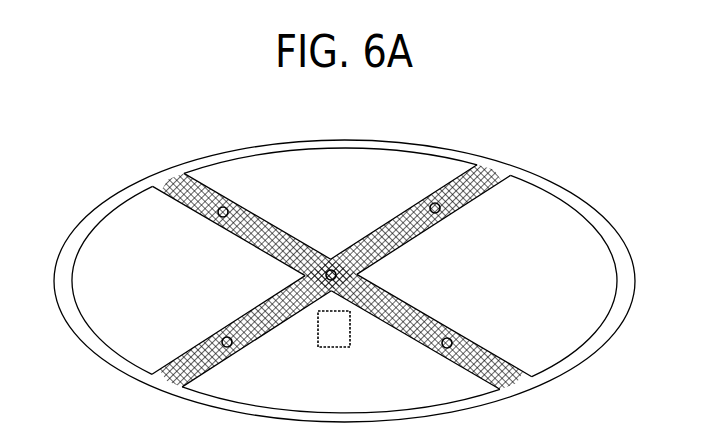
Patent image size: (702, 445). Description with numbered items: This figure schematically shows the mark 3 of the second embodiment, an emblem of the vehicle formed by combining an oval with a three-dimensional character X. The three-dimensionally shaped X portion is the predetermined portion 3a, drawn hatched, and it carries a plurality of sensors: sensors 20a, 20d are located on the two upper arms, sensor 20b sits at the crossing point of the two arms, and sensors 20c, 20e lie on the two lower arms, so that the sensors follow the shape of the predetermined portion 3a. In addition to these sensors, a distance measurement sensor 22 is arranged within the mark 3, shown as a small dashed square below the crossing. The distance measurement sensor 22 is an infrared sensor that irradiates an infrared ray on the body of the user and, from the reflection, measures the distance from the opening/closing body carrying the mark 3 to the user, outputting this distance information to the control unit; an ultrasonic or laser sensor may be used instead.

The mark 3 is at (116, 169).
The predetermined portion 3a is at (181, 180).
The sensor 20a is at (229, 208).
The sensor 20b is at (332, 268).
The sensor 20c is at (449, 337).
The sensor 20d is at (429, 204).
The sensor 20e is at (236, 347).
The distance measurement sensor 22 is at (335, 350).